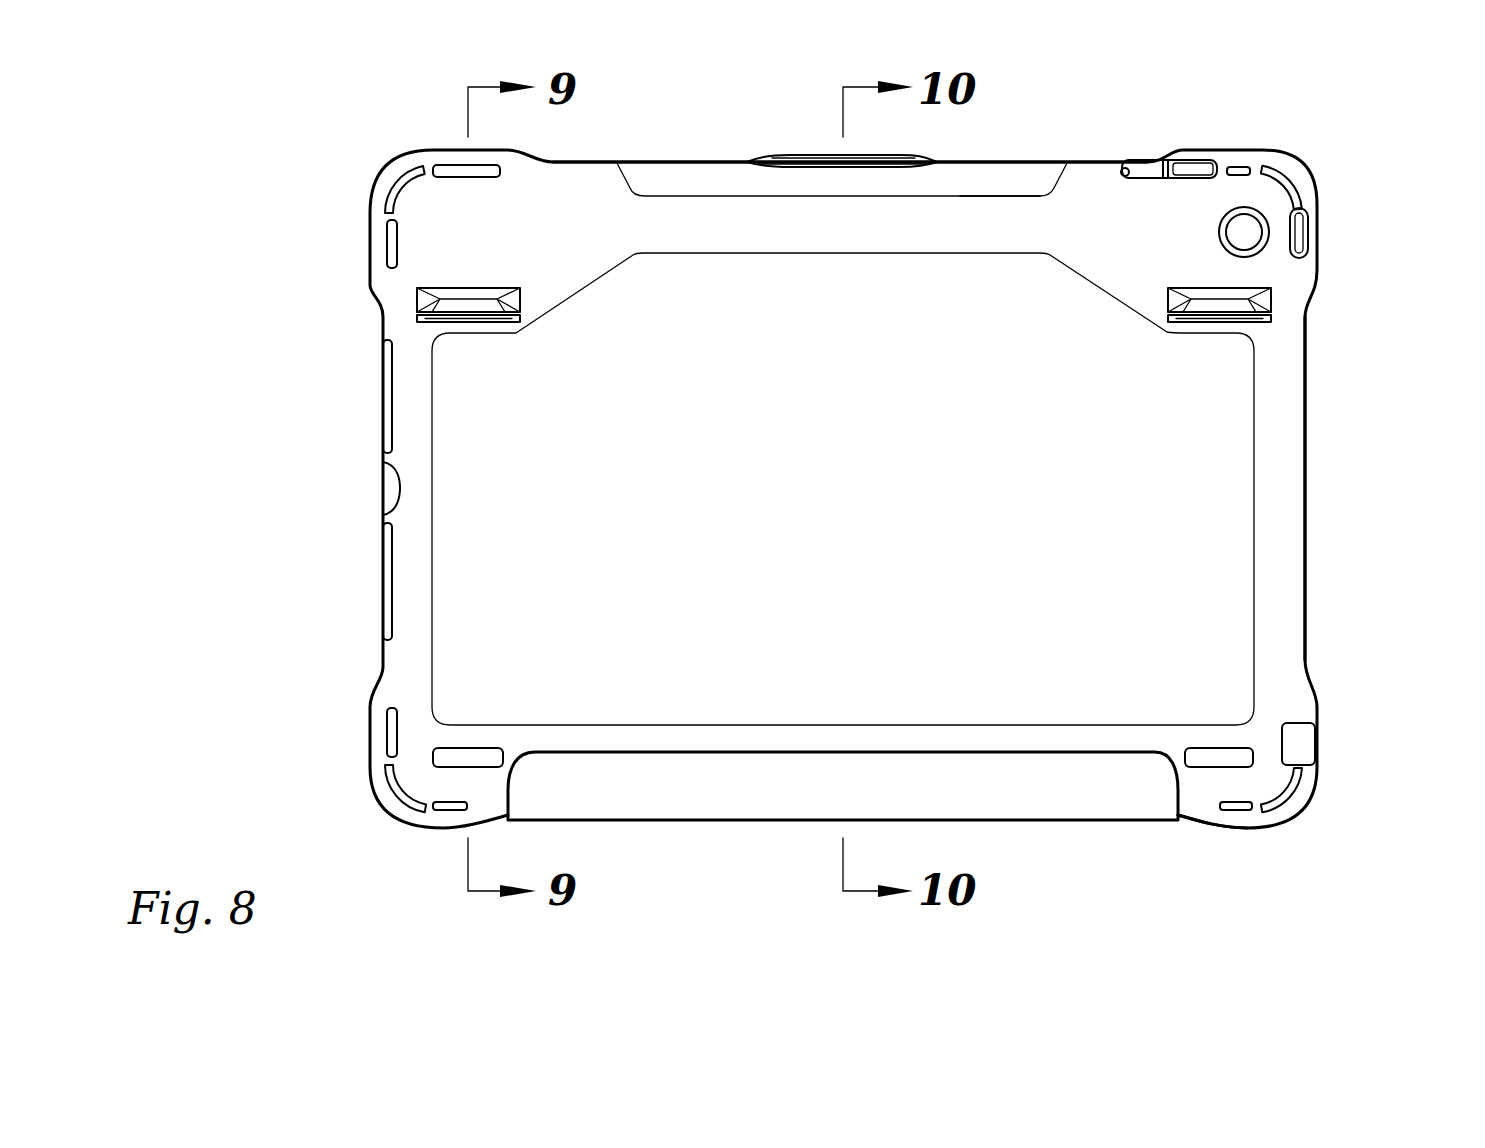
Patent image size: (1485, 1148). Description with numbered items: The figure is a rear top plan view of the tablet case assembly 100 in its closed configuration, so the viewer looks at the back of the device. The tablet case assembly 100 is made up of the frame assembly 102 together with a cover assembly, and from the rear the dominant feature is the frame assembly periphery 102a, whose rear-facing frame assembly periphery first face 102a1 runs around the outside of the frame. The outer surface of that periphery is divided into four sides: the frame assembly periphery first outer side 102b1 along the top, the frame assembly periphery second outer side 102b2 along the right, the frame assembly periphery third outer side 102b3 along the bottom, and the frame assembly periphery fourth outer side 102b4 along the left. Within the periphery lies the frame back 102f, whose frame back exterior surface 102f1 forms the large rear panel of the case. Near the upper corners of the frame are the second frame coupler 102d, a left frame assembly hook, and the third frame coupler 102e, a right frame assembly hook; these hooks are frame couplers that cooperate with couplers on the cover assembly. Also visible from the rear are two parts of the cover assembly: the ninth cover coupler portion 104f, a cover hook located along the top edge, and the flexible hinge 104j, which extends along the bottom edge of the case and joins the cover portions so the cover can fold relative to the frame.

The tablet case assembly 100 is at (236, 156).
The frame assembly 102 is at (303, 497).
The frame assembly periphery 102a is at (1317, 193).
The frame assembly periphery first face 102a1 is at (697, 175).
The frame assembly periphery first outer side 102b1 is at (652, 162).
The frame assembly periphery second outer side 102b2 is at (1305, 445).
The frame assembly periphery third outer side 102b3 is at (1197, 828).
The frame assembly periphery fourth outer side 102b4 is at (382, 408).
The second frame coupler 102d is at (457, 293).
The third frame coupler 102e is at (1224, 293).
The frame back 102f is at (1095, 180).
The frame back exterior surface 102f1 is at (1010, 215).
The ninth cover coupler portion 104f is at (803, 153).
The flexible hinge 104j is at (730, 790).